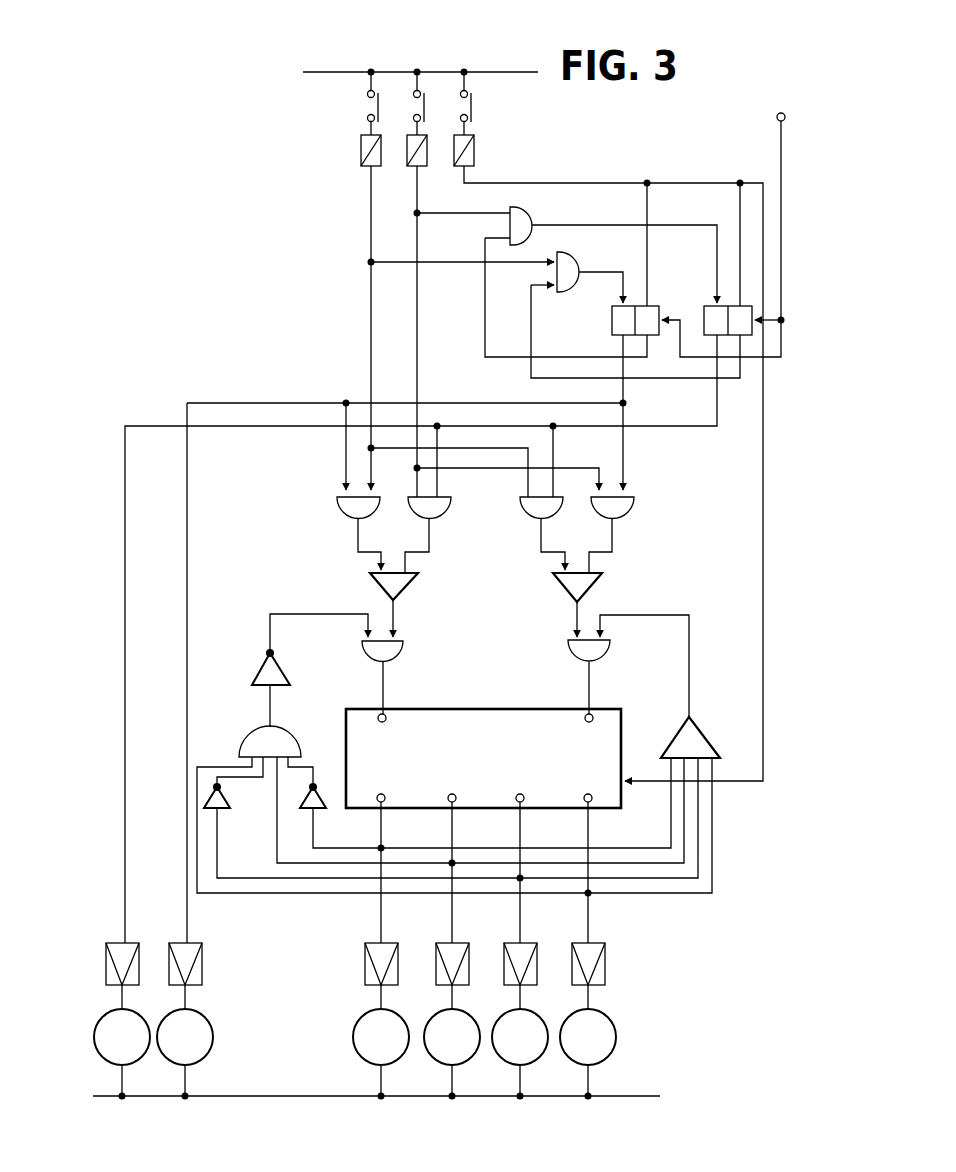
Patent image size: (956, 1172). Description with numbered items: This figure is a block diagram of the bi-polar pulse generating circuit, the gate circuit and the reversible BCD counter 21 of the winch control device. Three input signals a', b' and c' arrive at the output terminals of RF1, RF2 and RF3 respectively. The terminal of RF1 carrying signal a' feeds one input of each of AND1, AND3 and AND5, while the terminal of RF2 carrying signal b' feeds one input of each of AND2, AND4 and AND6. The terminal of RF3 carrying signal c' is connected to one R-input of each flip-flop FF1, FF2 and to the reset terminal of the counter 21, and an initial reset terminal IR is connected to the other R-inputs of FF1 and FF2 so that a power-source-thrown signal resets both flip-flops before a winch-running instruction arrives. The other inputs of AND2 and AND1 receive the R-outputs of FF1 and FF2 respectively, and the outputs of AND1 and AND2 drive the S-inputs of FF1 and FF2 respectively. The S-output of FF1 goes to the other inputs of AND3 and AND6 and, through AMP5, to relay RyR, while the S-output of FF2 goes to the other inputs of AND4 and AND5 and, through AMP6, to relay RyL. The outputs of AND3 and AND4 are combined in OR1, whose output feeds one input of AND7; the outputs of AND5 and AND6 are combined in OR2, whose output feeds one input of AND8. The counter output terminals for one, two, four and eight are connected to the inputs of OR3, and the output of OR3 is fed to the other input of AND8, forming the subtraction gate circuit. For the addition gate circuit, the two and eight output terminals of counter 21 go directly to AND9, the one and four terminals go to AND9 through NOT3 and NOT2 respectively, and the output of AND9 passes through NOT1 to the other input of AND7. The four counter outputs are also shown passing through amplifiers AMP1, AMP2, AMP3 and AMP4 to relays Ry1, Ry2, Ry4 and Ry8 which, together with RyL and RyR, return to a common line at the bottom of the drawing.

The reversible BCD counter 21 is at (490, 749).
The signal a' is at (359, 103).
The signal b' is at (406, 103).
The signal c' is at (453, 103).
The element RF1 is at (353, 165).
The element RF2 is at (400, 165).
The element RF3 is at (448, 165).
The initial reset terminal IR is at (723, 229).
The AND gate AND1 is at (506, 274).
The AND gate AND2 is at (567, 252).
The AND gate AND3 is at (332, 533).
The AND gate AND4 is at (407, 535).
The AND gate AND5 is at (516, 533).
The AND gate AND6 is at (593, 535).
The AND gate AND7 is at (405, 677).
The AND gate AND8 is at (612, 677).
The AND gate AND9 is at (251, 747).
The OR gate OR1 is at (411, 605).
The OR gate OR2 is at (595, 605).
The OR gate OR3 is at (458, 754).
The flip-flop FF1 is at (572, 364).
The flip-flop FF2 is at (438, 611).
The inverter NOT1 is at (310, 670).
The inverter NOT2 is at (241, 809).
The inverter NOT3 is at (337, 809).
The amplifier AMP1 is at (405, 963).
The amplifier AMP2 is at (475, 963).
The amplifier AMP3 is at (543, 963).
The amplifier AMP4 is at (611, 963).
The amplifier AMP5 is at (208, 963).
The amplifier AMP6 is at (145, 963).
The relay RyL is at (122, 1052).
The relay RyR is at (185, 1052).
The relay Ry1 is at (381, 1052).
The relay Ry2 is at (452, 1052).
The relay Ry4 is at (520, 1052).
The relay Ry8 is at (588, 1052).